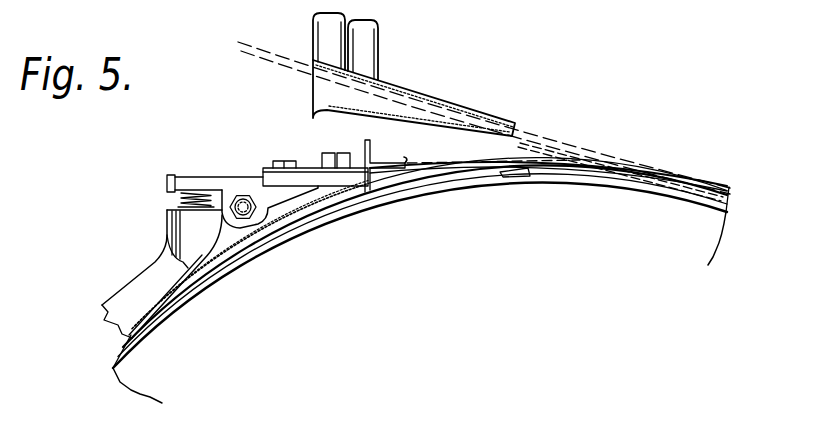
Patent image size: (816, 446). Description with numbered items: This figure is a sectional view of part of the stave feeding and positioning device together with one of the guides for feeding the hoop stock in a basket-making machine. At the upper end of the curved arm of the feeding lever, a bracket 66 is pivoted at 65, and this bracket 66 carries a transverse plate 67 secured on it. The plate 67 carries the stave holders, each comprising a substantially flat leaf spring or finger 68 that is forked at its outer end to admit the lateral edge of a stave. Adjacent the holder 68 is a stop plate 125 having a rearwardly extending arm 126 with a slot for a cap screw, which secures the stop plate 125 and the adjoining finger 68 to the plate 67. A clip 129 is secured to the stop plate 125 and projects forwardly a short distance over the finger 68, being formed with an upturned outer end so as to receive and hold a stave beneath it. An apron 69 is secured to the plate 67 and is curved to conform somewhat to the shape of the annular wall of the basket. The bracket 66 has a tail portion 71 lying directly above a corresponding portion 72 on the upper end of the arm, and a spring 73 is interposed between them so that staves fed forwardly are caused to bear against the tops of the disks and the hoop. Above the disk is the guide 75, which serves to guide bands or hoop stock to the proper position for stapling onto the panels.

The pivot 65 is at (243, 196).
The bracket 66 is at (216, 177).
The transverse plate 67 is at (301, 178).
The leaf spring finger 68 is at (410, 175).
The apron 69 is at (293, 220).
The tail portion 71 is at (178, 176).
The corresponding portion 72 is at (170, 220).
The spring 73 is at (182, 200).
The guide 75 is at (440, 97).
The stop plate 125 is at (363, 146).
The rearwardly extending arm 126 is at (297, 162).
The clip 129 is at (405, 160).